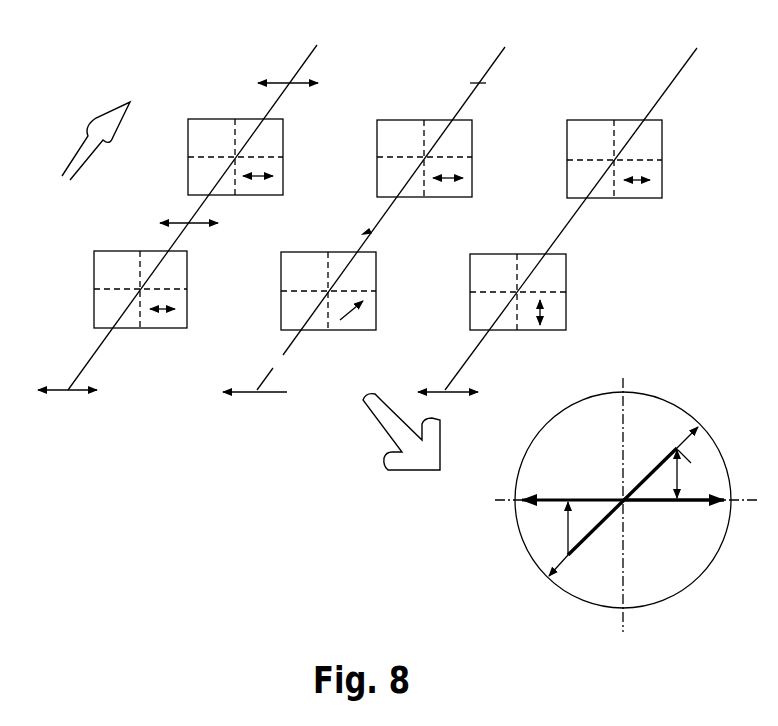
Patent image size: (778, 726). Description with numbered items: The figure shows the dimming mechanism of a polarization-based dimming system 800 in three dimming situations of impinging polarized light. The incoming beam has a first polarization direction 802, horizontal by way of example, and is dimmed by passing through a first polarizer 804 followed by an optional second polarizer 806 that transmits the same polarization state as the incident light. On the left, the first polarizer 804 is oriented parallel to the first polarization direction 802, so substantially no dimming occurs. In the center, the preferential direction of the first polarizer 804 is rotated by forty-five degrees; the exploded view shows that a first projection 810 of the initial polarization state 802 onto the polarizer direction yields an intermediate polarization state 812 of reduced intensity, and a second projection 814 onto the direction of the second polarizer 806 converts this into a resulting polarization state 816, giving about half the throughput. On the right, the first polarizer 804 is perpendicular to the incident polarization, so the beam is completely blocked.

The dimming system 800 is at (99, 57).
The first polarization direction 802 is at (447, 390).
The first polarizer 804 is at (102, 267).
The second polarizer 806 is at (198, 132).
The first projection 810 is at (565, 550).
The intermediate polarization state 812 is at (623, 501).
The second projection 814 is at (729, 499).
The resulting polarization state 816 is at (673, 510).